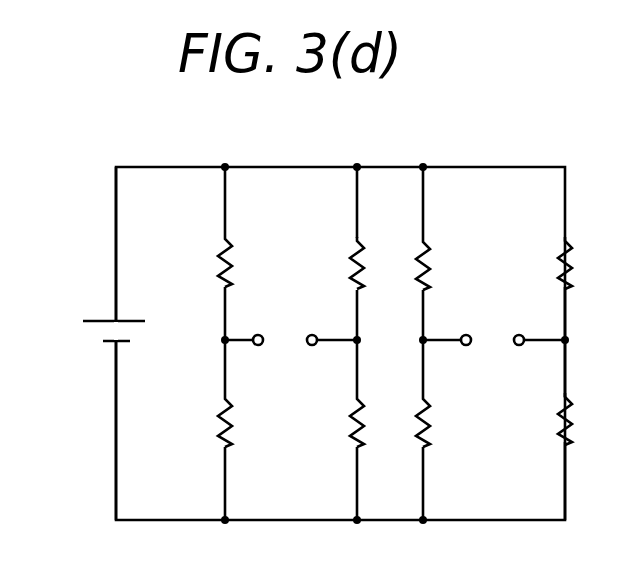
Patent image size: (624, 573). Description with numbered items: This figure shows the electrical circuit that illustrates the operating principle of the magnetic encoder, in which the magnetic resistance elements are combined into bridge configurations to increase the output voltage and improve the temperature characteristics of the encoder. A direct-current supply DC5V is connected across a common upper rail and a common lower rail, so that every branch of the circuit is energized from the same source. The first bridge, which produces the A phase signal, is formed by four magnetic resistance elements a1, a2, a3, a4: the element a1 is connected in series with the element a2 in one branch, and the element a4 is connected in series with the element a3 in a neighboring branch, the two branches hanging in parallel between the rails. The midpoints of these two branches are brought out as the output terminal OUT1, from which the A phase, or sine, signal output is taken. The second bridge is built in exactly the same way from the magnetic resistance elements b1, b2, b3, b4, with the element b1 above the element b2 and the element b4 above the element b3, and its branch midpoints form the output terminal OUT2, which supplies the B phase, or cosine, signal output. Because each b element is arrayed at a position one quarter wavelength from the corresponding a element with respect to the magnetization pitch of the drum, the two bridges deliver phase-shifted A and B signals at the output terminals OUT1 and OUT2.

The magnetic resistance element a1 is at (206, 262).
The magnetic resistance element a2 is at (205, 422).
The magnetic resistance element a3 is at (336, 422).
The magnetic resistance element a4 is at (338, 263).
The magnetic resistance element b1 is at (441, 264).
The magnetic resistance element b2 is at (440, 422).
The magnetic resistance element b3 is at (548, 421).
The magnetic resistance element b4 is at (547, 263).
The output terminal OUT1 is at (291, 355).
The output terminal OUT2 is at (494, 355).
The DC 5V supply battery DC5V is at (87, 343).